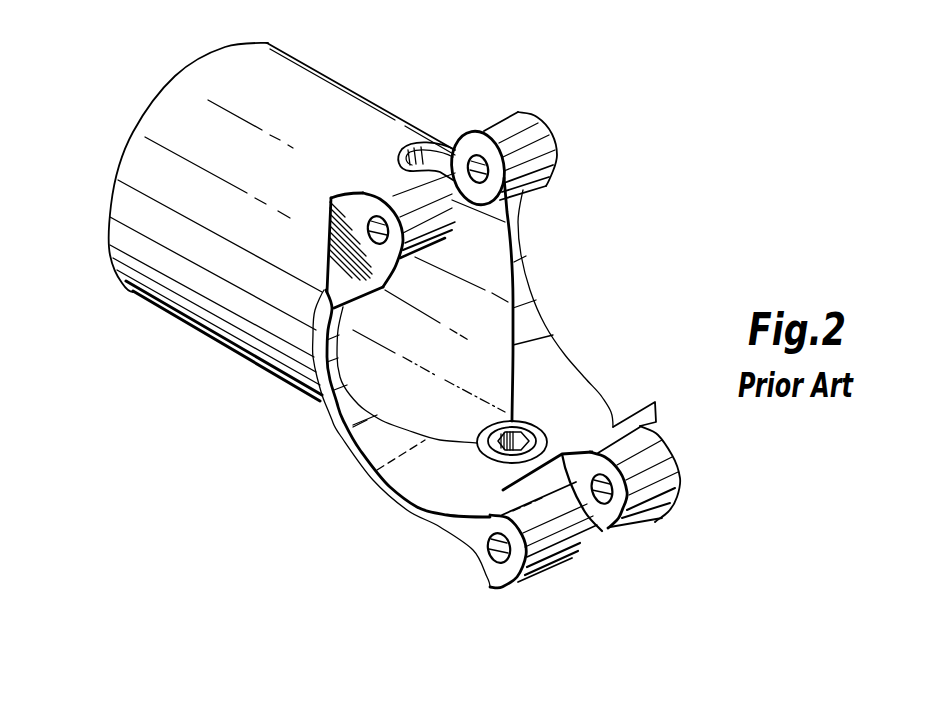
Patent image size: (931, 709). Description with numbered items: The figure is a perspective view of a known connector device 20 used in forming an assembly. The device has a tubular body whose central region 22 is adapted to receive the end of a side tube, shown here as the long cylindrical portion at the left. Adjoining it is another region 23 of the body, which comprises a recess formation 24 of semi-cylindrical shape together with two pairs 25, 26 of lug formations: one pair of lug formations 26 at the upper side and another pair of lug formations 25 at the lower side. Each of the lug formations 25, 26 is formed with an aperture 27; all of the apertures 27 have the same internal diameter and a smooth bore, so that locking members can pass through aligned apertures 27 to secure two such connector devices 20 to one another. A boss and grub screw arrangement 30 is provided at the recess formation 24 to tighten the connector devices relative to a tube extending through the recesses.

The connector device 20 is at (185, 341).
The central region 22 is at (140, 166).
The another region 23 is at (588, 320).
The recess formation 24 is at (606, 408).
The lug formations 25 is at (610, 525).
The lug formations 26 is at (423, 180).
The apertures 27 is at (390, 231).
The boss and grub screw arrangement 30 is at (483, 436).